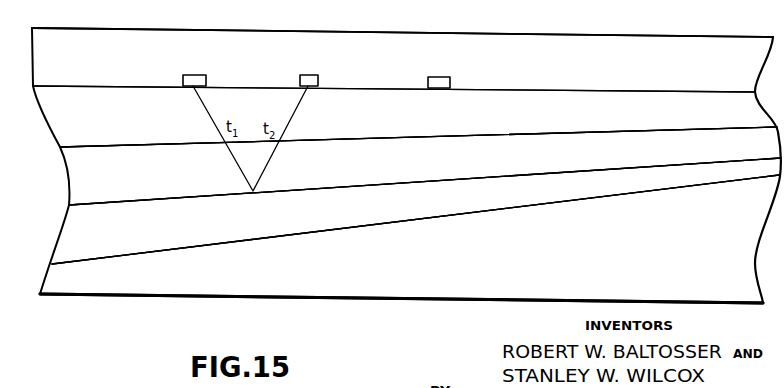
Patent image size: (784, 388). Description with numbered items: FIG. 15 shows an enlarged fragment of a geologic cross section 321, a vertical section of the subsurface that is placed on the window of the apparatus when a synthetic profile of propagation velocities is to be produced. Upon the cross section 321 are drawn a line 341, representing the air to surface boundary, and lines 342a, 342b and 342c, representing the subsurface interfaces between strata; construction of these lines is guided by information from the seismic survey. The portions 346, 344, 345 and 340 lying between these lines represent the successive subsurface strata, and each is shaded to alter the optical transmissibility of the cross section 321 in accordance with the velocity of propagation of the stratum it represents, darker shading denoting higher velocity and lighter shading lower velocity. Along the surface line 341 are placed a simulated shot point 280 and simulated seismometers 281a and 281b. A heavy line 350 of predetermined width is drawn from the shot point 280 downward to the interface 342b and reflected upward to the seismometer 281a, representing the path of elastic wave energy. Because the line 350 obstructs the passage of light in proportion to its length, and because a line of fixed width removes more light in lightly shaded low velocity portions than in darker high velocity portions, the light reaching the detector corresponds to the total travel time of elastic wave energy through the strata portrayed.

The geologic cross section 321 is at (200, 296).
The surface line 341 is at (127, 68).
The shaded portion representing stratum 346 is at (121, 137).
The shaded portion representing stratum 344 is at (127, 193).
The shaded portion representing stratum 345 is at (125, 245).
The shaded portion representing stratum 340 is at (152, 287).
The interface line 342a is at (206, 168).
The interface line 342b is at (252, 221).
The interface line 342c is at (290, 235).
The transducer 280 is at (218, 63).
The first receiver transducer 281a is at (368, 65).
The second receiver transducer 281b is at (490, 69).
The heavy line 350 is at (210, 118).